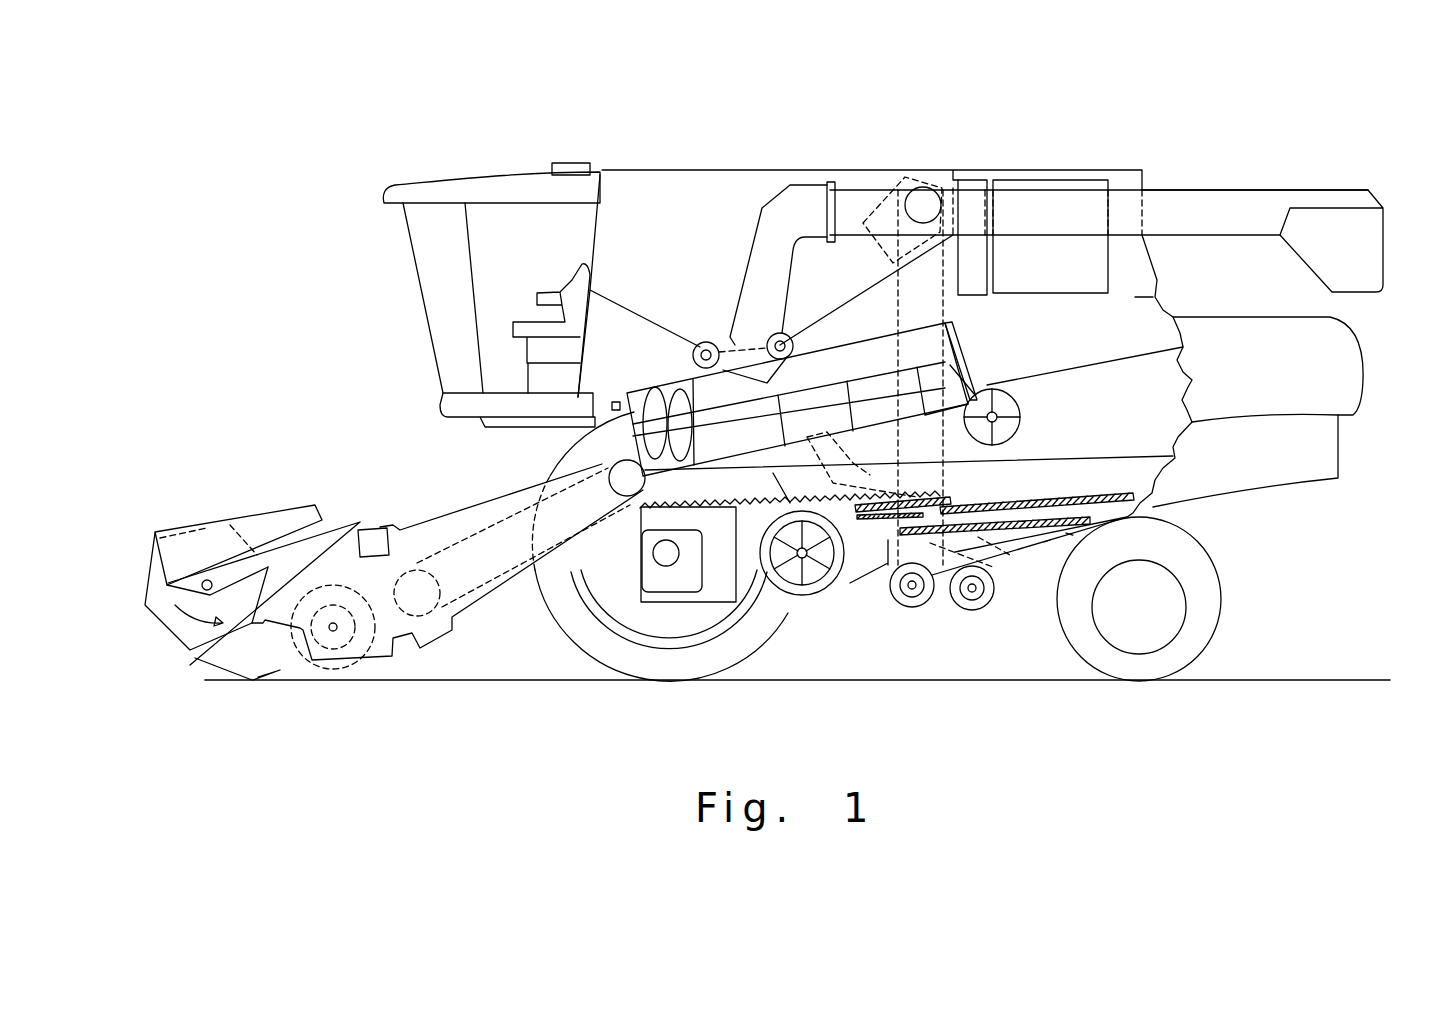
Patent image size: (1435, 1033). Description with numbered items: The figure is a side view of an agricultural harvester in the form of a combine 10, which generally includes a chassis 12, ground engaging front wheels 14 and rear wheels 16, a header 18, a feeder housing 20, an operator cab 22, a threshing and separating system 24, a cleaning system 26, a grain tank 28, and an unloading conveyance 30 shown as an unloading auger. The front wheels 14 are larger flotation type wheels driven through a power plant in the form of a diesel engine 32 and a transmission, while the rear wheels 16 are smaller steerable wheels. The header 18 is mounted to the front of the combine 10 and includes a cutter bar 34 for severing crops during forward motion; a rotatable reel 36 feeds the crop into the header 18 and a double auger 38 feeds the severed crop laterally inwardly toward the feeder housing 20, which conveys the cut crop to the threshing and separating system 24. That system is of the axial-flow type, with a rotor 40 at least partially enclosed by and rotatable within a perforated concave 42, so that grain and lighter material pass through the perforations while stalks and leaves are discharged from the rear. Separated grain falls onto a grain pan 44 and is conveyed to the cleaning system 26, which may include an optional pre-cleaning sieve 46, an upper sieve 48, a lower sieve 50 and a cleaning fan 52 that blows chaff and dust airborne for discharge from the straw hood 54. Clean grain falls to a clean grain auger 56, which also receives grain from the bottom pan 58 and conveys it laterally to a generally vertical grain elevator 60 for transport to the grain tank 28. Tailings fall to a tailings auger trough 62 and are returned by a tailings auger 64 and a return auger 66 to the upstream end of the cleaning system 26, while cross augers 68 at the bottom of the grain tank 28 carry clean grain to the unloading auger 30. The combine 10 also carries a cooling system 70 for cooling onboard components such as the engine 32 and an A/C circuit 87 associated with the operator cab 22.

The combine 10 is at (485, 160).
The chassis 12 is at (1155, 510).
The front wheels 14 is at (568, 635).
The rear wheels 16 is at (1218, 618).
The header 18 is at (245, 502).
The feeder housing 20 is at (456, 496).
The operator cab 22 is at (417, 277).
The threshing and separating system 24 is at (570, 440).
The cleaning system 26 is at (874, 603).
The grain tank 28 is at (657, 178).
The unloading conveyance 30 is at (1235, 190).
The diesel engine 32 is at (1040, 180).
The cutter bar 34 is at (258, 677).
The rotatable reel 36 is at (150, 575).
The double auger 38 is at (333, 650).
The rotor 40 is at (653, 402).
The perforated concave 42 is at (845, 362).
The grain pan 44 is at (640, 512).
The pre-cleaning sieve 46 is at (950, 500).
The upper sieve 48 is at (1053, 497).
The lower sieve 50 is at (1030, 540).
The cleaning fan 52 is at (802, 597).
The straw hood 54 is at (1355, 362).
The clean grain auger 56 is at (918, 607).
The bottom pan 58 is at (1073, 535).
The grain elevator 60 is at (950, 305).
The tailings auger trough 62 is at (1050, 540).
The tailings auger 64 is at (970, 610).
The return auger 66 is at (885, 480).
The cross augers 68 is at (703, 342).
The cooling system 70 is at (968, 180).
The A/C circuit 87 is at (568, 163).